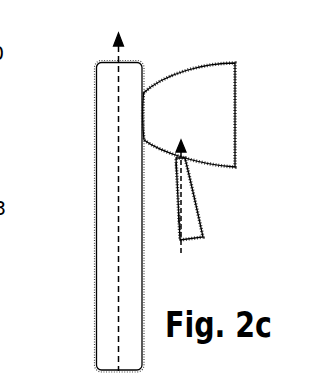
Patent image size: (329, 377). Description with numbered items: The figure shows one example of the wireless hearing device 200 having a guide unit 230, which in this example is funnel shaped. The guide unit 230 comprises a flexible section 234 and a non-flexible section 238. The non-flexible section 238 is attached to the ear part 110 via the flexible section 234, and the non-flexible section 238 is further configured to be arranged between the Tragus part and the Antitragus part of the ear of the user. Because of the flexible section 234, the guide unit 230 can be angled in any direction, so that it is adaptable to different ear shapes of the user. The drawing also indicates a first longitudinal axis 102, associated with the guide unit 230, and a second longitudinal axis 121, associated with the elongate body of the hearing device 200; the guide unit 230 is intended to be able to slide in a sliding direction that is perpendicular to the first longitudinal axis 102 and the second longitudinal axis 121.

The wireless hearing device 200 is at (74, 119).
The ear part 110 is at (218, 83).
The guide unit 230 is at (185, 170).
The flexible section 234 is at (177, 167).
The non-flexible section 238 is at (176, 218).
The second longitudinal axis 121 is at (118, 262).
The first longitudinal axis 102 is at (181, 252).